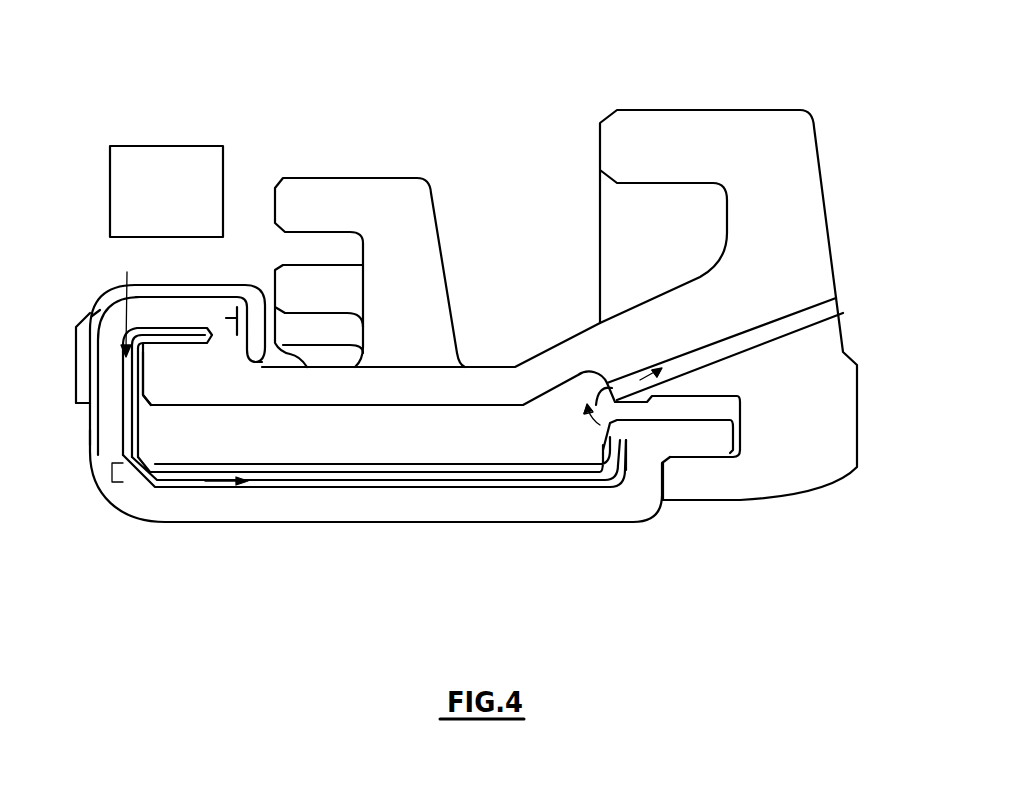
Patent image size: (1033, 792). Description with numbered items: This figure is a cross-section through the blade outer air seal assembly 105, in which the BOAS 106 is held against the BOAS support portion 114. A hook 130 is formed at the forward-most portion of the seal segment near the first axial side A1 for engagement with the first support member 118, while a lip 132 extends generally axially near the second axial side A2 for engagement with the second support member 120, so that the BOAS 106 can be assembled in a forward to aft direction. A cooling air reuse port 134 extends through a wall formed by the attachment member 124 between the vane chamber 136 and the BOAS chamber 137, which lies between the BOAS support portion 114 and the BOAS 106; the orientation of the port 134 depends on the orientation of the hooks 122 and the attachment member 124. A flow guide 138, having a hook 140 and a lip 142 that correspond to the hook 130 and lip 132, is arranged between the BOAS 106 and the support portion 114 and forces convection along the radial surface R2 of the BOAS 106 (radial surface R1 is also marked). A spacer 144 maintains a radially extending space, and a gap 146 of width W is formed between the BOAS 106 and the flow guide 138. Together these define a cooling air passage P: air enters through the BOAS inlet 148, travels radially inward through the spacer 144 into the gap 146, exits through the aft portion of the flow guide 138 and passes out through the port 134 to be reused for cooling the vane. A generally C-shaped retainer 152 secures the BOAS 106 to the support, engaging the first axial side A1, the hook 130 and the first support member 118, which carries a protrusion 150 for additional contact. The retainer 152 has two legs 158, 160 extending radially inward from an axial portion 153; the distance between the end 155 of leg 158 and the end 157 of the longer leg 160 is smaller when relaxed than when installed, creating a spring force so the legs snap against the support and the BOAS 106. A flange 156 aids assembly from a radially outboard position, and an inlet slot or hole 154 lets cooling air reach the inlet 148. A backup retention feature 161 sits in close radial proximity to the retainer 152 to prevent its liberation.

The blade outer air seal assembly 105 is at (390, 102).
The BOAS 106 is at (148, 503).
The BOAS support portion 114 is at (460, 378).
The first support member 118 is at (181, 312).
The second support member 120 is at (688, 490).
The hooks 122 is at (320, 193).
The attachment member 124 is at (653, 143).
The hook 130 is at (167, 307).
The lip 132 is at (693, 443).
The cooling air reuse port 134 is at (805, 318).
The vane chamber 136 is at (845, 302).
The BOAS chamber 137 is at (548, 443).
The flow guide 138 is at (140, 412).
The hook 140 is at (100, 298).
The lip 142 is at (630, 418).
The spacer 144 is at (123, 370).
The gap 146 is at (508, 482).
The BOAS inlet 148 is at (143, 300).
The protrusion 150 is at (236, 300).
The retainer 152 is at (96, 314).
The axial portion 153 is at (227, 318).
The inlet slot or hole 154 is at (150, 298).
The end 155 is at (262, 364).
The flange 156 is at (308, 362).
The end 157 is at (75, 407).
The leg 158 is at (271, 345).
The leg 160 is at (82, 372).
The backup retention feature 161 is at (188, 157).
The cooling air passage P is at (210, 482).
The first axial side A1 is at (92, 437).
The second axial side A2 is at (720, 453).
The width W is at (112, 472).
The radial surface R1 is at (350, 523).
The radial surface R2 is at (320, 490).